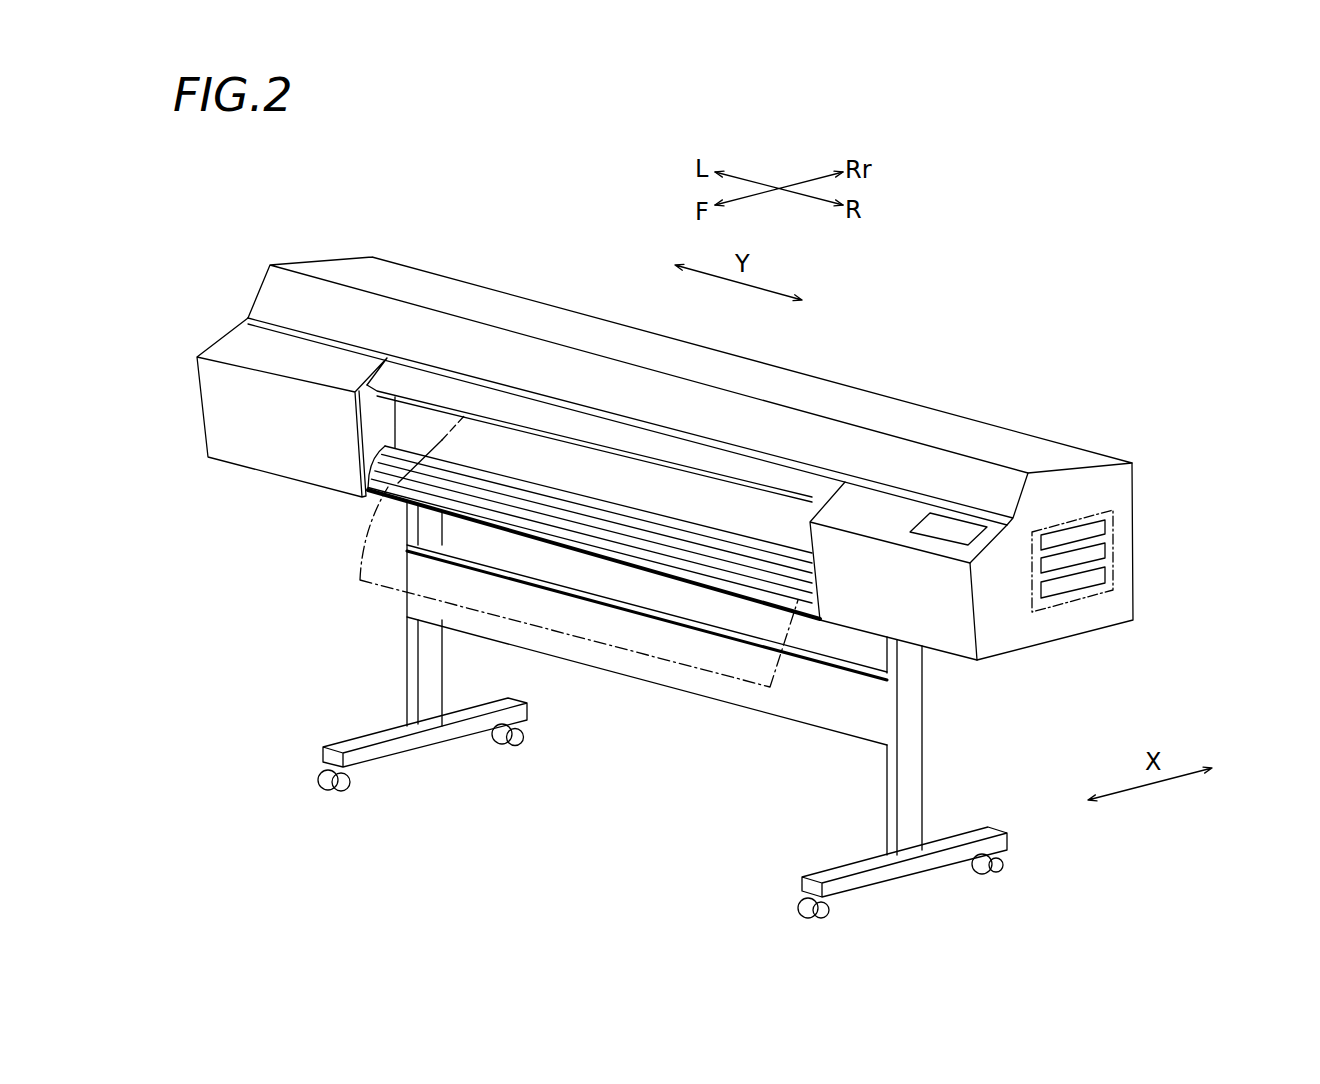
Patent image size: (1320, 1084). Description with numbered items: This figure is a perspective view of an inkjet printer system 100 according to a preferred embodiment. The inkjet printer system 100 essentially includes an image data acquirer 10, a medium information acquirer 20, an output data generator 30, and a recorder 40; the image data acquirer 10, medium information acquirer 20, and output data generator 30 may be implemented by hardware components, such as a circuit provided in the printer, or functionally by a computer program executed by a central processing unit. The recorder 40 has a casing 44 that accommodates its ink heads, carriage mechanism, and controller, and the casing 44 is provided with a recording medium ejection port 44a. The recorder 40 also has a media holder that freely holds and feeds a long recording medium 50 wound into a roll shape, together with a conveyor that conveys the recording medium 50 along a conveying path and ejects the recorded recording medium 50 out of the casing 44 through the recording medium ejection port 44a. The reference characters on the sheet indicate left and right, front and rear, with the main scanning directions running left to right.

The inkjet printer system 100 is at (1033, 280).
The casing 44 is at (832, 400).
The recording medium ejection port 44a is at (395, 422).
The recorder 40 is at (1053, 443).
The image data acquirer 10 is at (1105, 527).
The medium information acquirer 20 is at (1105, 551).
The output data generator 30 is at (1105, 575).
The recording medium 50 is at (572, 638).